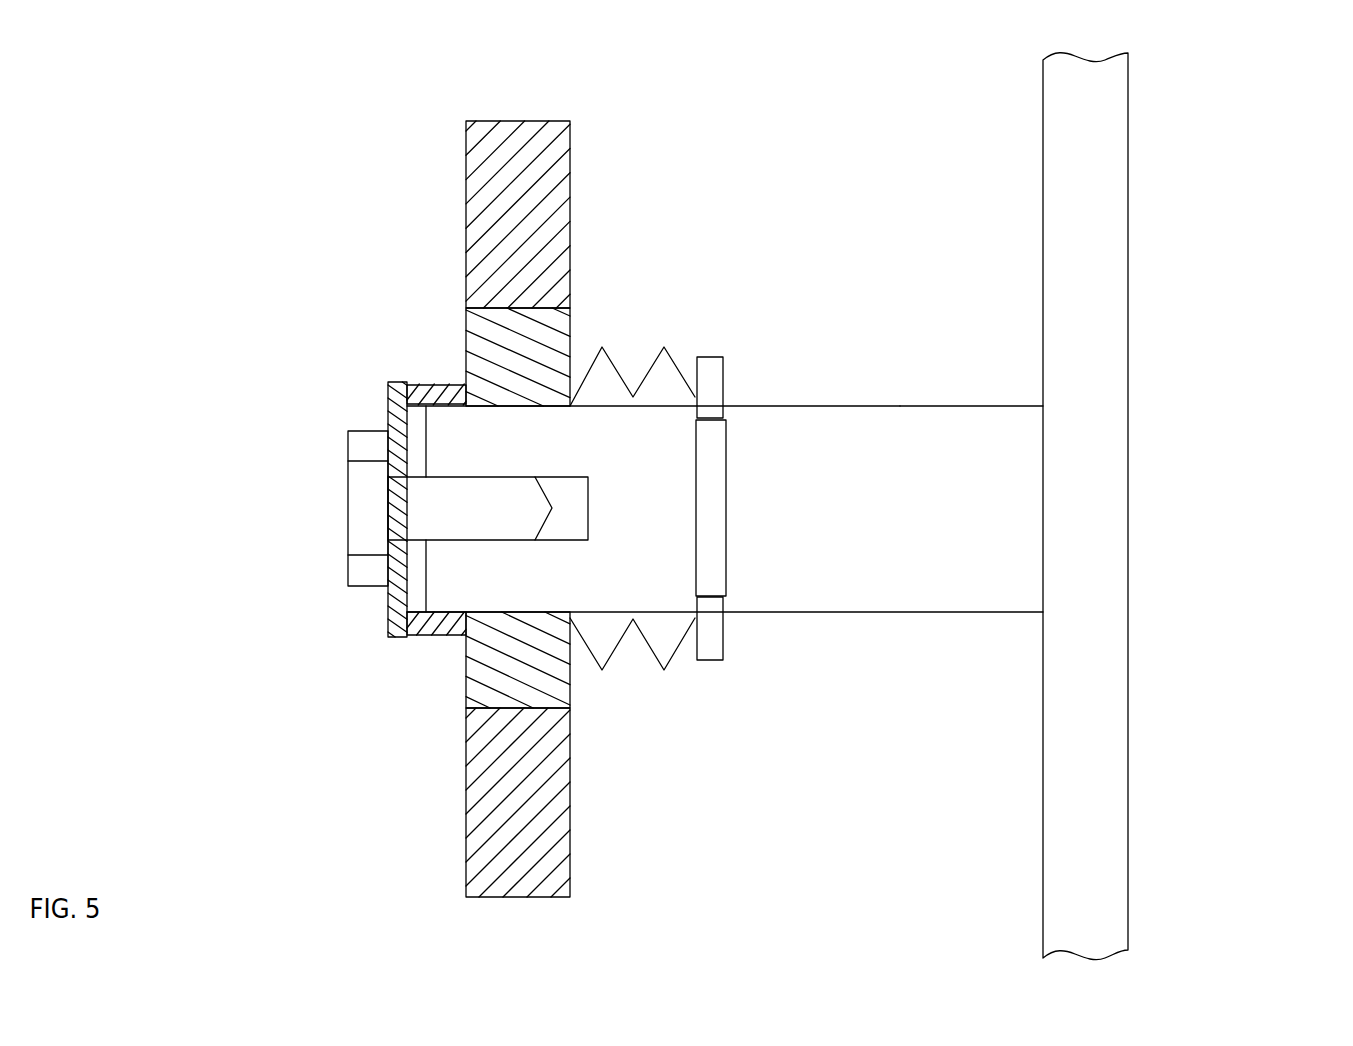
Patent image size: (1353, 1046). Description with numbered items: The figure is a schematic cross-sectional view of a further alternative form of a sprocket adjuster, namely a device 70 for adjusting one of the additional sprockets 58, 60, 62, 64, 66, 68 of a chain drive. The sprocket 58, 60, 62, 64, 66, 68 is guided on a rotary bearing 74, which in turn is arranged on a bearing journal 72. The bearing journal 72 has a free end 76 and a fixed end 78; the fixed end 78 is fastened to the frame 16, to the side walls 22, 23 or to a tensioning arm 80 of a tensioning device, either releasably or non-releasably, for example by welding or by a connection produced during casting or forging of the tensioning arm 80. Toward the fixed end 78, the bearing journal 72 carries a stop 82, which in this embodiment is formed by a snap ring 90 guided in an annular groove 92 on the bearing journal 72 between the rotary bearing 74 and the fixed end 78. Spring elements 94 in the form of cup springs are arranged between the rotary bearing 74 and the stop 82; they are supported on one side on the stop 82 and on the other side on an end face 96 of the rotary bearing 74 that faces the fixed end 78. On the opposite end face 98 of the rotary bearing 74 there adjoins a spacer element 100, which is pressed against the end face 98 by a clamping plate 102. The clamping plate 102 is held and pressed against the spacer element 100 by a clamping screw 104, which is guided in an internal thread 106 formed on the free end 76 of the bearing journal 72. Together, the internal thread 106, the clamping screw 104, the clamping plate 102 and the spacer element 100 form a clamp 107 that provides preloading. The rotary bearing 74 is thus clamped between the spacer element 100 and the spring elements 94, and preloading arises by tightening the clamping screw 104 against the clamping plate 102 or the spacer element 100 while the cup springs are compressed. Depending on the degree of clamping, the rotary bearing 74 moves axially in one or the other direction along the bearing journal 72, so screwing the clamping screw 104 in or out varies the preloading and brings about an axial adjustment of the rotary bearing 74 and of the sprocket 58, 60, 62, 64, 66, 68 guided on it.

The device 70 is at (304, 182).
The sprocket 58 is at (435, 467).
The sprocket 60 is at (435, 467).
The sprocket 62 is at (435, 467).
The sprocket 64 is at (435, 467).
The sprocket 66 is at (435, 467).
The sprocket 68 is at (518, 140).
The rotary bearing 74 is at (570, 320).
The end face 96 is at (520, 325).
The end face 98 is at (467, 682).
The bearing journal 72 is at (891, 595).
The free end 76 is at (483, 437).
The fixed end 78 is at (1043, 412).
The frame 16 is at (1189, 506).
The side wall 22 is at (1189, 506).
The side wall 23 is at (1189, 506).
The tensioning arm 80 is at (1082, 198).
The spring elements 94 is at (653, 638).
The stop 82 is at (707, 387).
The annular groove 92 is at (713, 528).
The snap ring 90 is at (711, 638).
The clamping plate 102 is at (398, 393).
The spacer element 100 is at (425, 636).
The clamping screw 104 is at (367, 515).
The internal thread 106 is at (575, 534).
The clamp 107 is at (316, 579).